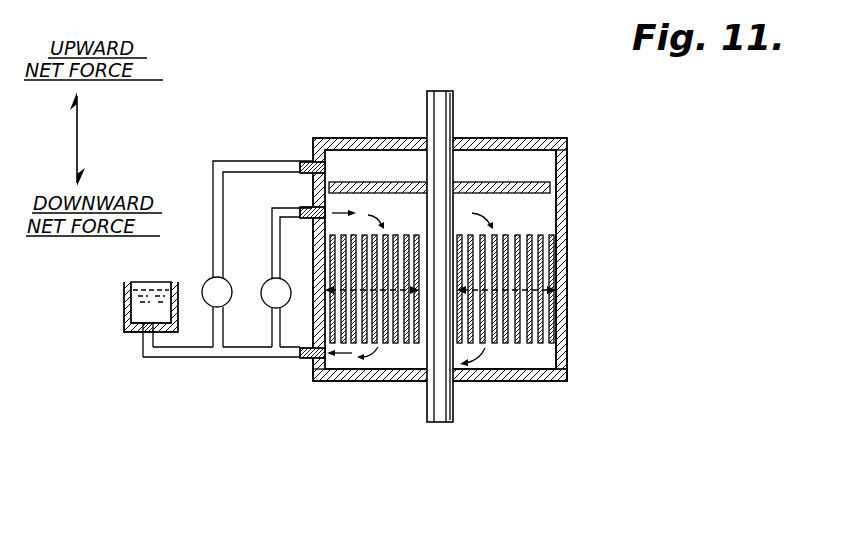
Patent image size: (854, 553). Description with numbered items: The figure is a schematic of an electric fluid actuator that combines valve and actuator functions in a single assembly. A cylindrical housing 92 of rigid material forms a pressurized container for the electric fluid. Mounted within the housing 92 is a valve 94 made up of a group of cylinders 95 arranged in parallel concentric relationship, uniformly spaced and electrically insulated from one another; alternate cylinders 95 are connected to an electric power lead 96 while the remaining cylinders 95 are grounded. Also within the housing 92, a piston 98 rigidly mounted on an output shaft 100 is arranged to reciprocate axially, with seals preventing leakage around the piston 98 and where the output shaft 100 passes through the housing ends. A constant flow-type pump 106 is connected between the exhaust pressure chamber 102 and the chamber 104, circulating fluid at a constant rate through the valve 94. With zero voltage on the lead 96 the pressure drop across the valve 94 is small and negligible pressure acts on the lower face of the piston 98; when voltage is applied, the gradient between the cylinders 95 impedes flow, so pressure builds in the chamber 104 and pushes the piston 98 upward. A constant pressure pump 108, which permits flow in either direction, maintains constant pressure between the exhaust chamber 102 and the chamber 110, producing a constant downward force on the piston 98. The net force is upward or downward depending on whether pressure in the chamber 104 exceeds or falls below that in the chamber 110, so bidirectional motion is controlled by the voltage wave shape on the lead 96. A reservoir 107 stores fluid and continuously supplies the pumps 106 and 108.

The cylindrical housing 92 is at (500, 139).
The valve 94 is at (379, 350).
The cylinders 95 is at (400, 347).
The electric power lead 96 is at (548, 263).
The piston 98 is at (537, 182).
The output shaft 100 is at (447, 90).
The exhaust pressure chamber 102 is at (546, 366).
The chamber 104 is at (530, 226).
The constant flow-type pump 106 is at (264, 300).
The reservoir 107 is at (118, 337).
The constant pressure pump 108 is at (205, 280).
The chamber 110 is at (388, 173).